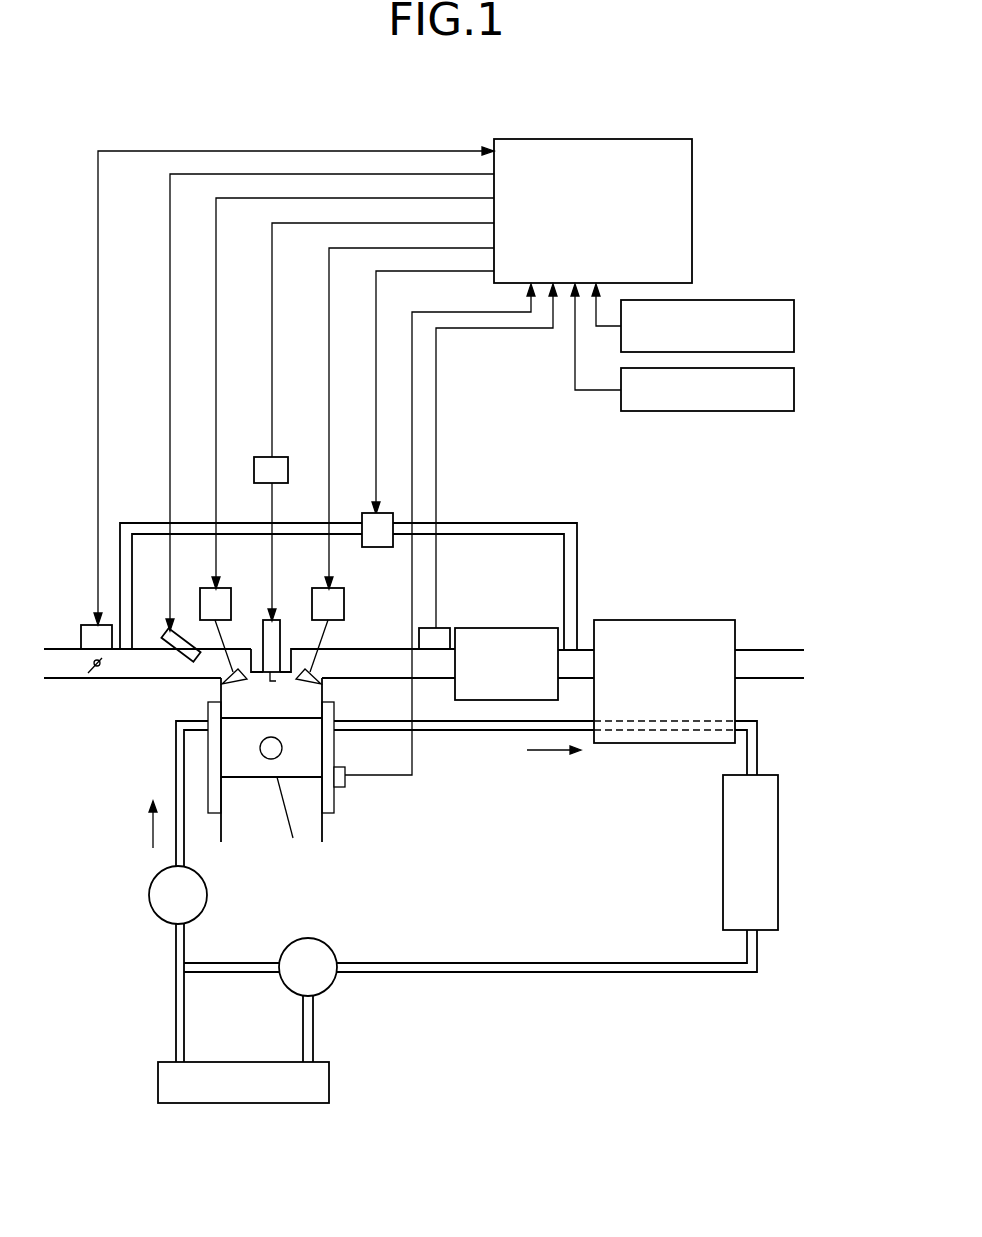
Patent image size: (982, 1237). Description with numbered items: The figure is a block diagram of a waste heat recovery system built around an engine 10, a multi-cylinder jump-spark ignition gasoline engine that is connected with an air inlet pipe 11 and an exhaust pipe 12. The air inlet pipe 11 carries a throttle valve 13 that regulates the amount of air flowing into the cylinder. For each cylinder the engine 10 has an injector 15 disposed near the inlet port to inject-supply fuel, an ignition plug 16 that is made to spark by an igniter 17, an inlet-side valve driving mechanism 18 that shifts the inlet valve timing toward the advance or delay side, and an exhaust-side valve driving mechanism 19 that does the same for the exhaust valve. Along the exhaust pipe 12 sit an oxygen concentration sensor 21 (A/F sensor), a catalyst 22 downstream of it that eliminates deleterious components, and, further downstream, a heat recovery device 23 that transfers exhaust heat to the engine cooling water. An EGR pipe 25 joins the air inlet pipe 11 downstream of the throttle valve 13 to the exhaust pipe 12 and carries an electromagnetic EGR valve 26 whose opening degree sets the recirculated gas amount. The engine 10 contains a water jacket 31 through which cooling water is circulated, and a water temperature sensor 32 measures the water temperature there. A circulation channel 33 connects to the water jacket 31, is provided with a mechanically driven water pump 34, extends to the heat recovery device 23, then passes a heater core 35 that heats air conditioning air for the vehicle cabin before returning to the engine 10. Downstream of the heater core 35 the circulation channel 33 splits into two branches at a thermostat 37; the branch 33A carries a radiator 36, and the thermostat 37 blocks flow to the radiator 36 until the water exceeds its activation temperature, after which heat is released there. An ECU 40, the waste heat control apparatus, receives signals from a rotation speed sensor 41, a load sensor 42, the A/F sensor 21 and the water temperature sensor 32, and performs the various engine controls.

The engine 10 is at (84, 470).
The air inlet pipe 11 is at (140, 680).
The exhaust pipe 12 is at (380, 681).
The throttle valve 13 is at (93, 678).
The injector 15 is at (166, 640).
The ignition plug 16 is at (280, 624).
The igniter 17 is at (283, 456).
The inlet-side valve driving mechanism 18 is at (231, 590).
The exhaust-side valve driving mechanism 19 is at (345, 603).
The oxygen concentration sensor 21 is at (437, 627).
The catalyst 22 is at (513, 627).
The heat recovery device 23 is at (664, 619).
The EGR pipe 25 is at (516, 524).
The EGR valve 26 is at (363, 512).
The water jacket 31 is at (334, 800).
The water temperature sensor 32 is at (345, 770).
The circulation channel 33 is at (483, 732).
The branch 33A is at (314, 1022).
The water pump 34 is at (208, 893).
The heater core 35 is at (779, 850).
The radiator 36 is at (330, 1082).
The thermostat 37 is at (307, 938).
The ECU 40 is at (596, 139).
The rotation speed sensor 41 is at (794, 327).
The load sensor 42 is at (794, 390).